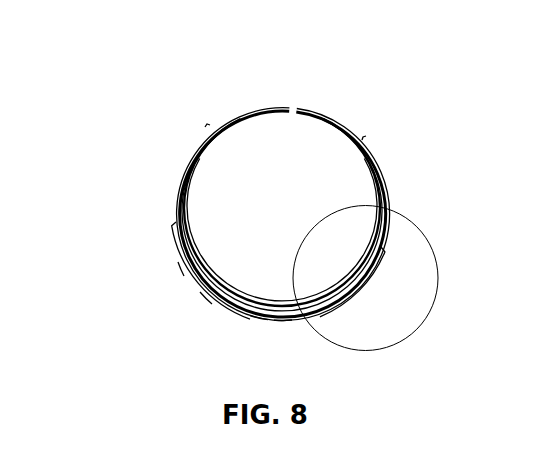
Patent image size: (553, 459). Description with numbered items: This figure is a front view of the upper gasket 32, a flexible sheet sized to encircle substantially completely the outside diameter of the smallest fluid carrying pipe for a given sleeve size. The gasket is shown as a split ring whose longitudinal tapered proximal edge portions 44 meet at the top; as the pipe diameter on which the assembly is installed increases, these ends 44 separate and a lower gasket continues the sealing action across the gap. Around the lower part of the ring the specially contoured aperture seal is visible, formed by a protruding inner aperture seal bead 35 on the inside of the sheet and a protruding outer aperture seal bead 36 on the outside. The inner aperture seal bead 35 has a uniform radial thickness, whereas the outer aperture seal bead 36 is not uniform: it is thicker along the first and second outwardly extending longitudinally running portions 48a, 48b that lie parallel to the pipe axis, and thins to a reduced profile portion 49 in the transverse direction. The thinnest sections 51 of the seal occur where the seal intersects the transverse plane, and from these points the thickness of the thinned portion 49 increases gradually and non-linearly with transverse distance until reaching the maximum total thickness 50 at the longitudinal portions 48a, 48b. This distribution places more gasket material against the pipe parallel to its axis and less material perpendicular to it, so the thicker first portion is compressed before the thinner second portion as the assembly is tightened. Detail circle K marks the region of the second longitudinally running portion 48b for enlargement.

The upper gasket 32 is at (291, 104).
The inner aperture seal bead 35 is at (280, 302).
The tapered proximal edge portions 44 is at (226, 122).
The first outwardly extending longitudinally running portion 48a is at (168, 245).
The second outwardly extending longitudinally running portion 48b is at (373, 291).
The first thickness 50 is at (222, 238).
The outer aperture seal bead 36 is at (207, 302).
The second thickness 51 is at (260, 322).
The thinned profile portion 49 is at (281, 323).
The detail circle K is at (327, 206).